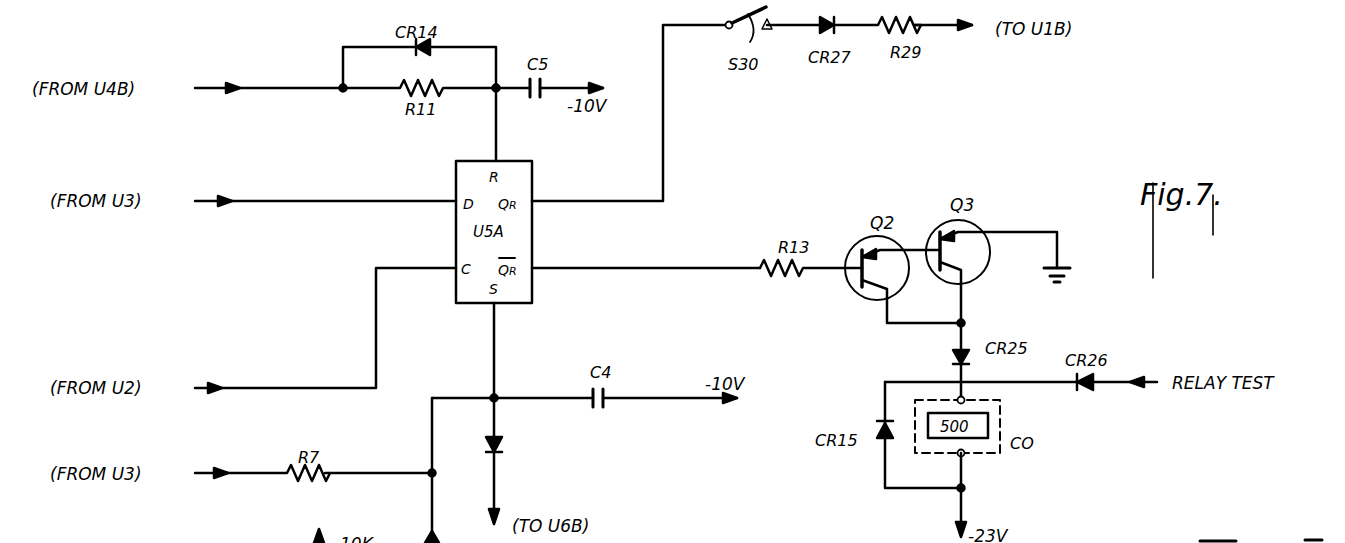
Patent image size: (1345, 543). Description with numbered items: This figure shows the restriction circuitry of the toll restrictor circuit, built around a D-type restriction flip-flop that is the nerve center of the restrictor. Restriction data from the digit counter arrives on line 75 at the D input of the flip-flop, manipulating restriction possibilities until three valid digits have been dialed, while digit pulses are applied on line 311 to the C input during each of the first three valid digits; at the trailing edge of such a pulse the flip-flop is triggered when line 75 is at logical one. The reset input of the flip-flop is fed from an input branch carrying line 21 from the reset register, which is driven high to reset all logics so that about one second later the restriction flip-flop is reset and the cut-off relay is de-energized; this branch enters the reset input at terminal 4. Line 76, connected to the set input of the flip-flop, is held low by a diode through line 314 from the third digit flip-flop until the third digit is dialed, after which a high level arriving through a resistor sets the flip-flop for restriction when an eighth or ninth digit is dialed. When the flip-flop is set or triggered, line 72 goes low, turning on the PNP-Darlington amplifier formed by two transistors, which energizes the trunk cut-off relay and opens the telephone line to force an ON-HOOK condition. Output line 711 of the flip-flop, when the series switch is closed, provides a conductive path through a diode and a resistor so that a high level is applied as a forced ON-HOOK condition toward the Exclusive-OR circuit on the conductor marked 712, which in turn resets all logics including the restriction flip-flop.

The output line of reset register U4B 21 is at (286, 89).
The reset input line 4 is at (504, 124).
The line to the D input of U5A 75 is at (388, 190).
The digit pulse line to the C input of U5A 311 is at (398, 273).
The output line of flip-flop U5A 711 is at (617, 210).
The output line of U5A to the amplifier 72 is at (618, 275).
The set input line of U5A 76 is at (494, 354).
The line from third digit flip-flop U6B 314 is at (494, 487).
The output line to U1B 712 is at (951, 31).